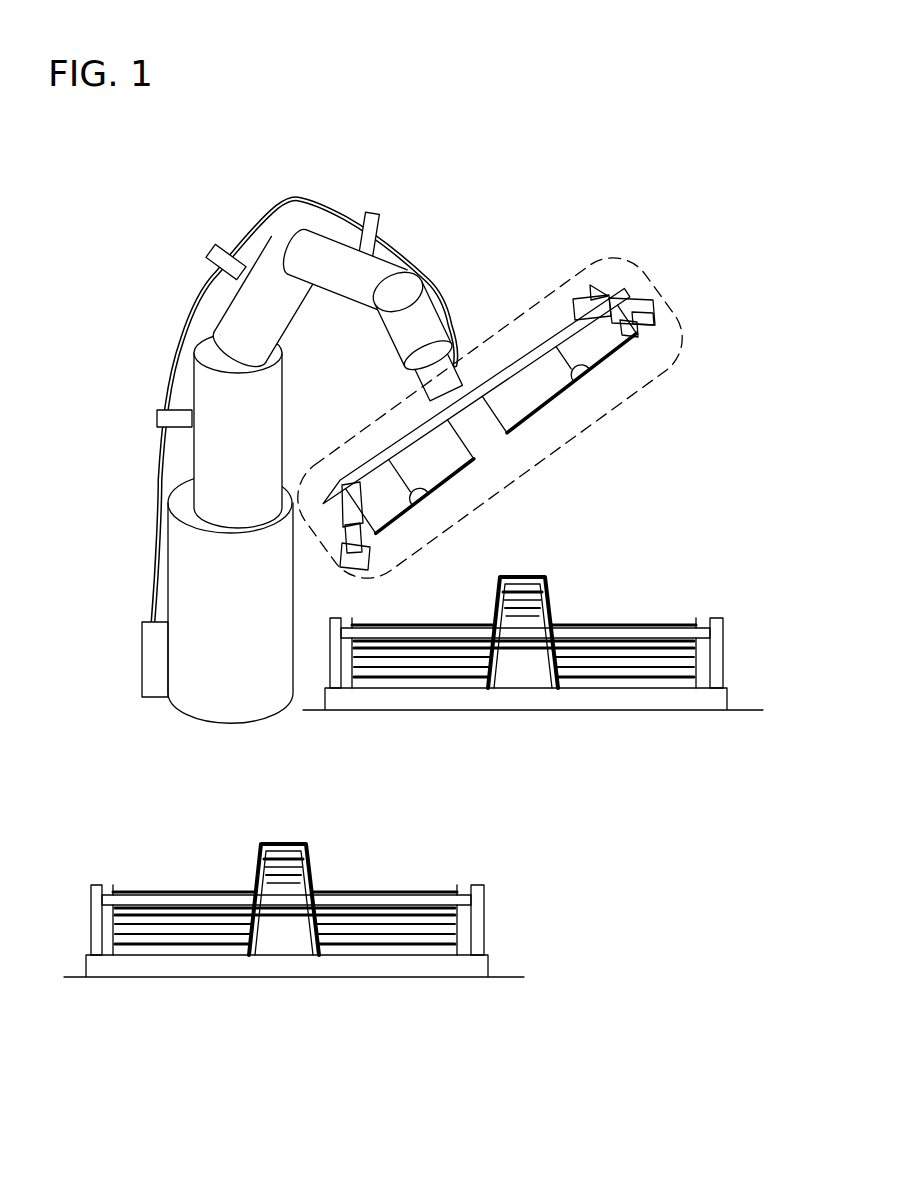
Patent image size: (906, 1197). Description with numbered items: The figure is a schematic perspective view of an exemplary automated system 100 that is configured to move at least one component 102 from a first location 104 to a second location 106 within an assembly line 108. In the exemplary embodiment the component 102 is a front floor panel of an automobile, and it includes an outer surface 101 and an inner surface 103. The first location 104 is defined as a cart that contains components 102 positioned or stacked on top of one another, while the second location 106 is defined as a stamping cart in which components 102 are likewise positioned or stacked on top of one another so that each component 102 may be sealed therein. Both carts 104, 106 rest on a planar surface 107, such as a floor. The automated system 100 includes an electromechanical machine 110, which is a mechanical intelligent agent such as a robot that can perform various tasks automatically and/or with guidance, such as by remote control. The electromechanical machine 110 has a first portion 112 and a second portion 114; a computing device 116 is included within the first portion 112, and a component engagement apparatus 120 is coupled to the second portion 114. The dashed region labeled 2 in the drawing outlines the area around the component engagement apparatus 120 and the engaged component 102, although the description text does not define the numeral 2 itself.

The automated system 100 is at (203, 168).
The electromechanical machine 110 is at (155, 333).
The first portion 112 is at (125, 642).
The second portion 114 is at (467, 348).
The computing device 116 is at (153, 703).
The component engagement apparatus 120 is at (695, 263).
The gripper region 2 is at (582, 245).
The outer surface 101 is at (507, 400).
The inner surface 103 is at (558, 402).
The component 102 is at (623, 547).
The first location 104 is at (626, 716).
The second location 106 is at (502, 922).
The planar surface 107 is at (750, 710).
The assembly line 108 is at (756, 564).